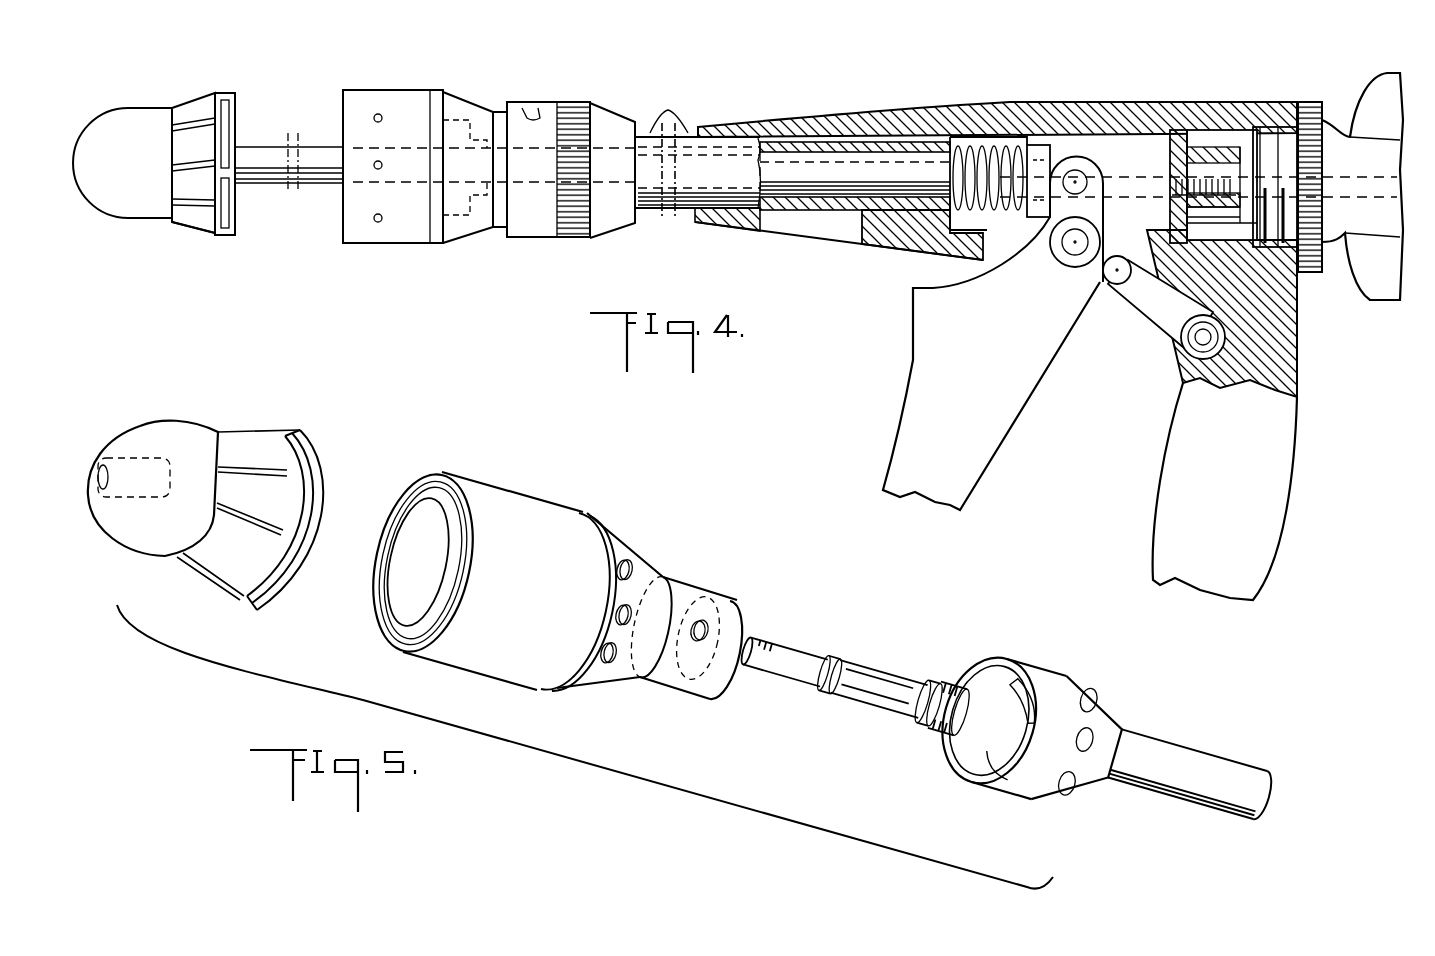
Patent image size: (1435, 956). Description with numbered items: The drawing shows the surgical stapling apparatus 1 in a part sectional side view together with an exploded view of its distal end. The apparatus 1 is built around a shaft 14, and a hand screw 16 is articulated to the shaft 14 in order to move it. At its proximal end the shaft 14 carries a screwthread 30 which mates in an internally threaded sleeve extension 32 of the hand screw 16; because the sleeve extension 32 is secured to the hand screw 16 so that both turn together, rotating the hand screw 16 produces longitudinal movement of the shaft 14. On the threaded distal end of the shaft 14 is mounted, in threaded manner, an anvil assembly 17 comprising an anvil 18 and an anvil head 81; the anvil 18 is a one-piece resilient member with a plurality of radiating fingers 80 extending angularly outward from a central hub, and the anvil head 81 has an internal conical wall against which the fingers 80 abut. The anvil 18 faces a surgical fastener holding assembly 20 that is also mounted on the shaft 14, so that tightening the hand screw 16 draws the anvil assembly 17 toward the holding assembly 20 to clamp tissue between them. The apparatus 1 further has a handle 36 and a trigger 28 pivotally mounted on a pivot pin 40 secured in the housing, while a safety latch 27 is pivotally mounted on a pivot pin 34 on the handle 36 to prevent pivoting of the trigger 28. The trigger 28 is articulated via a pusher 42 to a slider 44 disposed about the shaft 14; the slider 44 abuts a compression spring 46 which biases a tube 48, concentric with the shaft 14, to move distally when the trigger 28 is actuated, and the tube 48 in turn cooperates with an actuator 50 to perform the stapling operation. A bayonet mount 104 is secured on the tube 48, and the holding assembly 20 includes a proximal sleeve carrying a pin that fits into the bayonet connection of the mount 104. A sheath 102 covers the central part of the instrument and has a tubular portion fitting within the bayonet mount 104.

In FIG. 4, the surgical stapling apparatus 1 is at (786, 98).
In FIG. 4, the shaft 14 is at (320, 148).
In FIG. 4, the hand screw 16 is at (1370, 80).
In FIG. 4, the anvil assembly 17 is at (180, 279).
In FIG. 5, the anvil assembly 17 is at (176, 601).
In FIG. 4, the anvil 18 is at (178, 104).
In FIG. 5, the anvil 18 is at (258, 432).
In FIG. 4, the surgical fastener holding assembly 20 is at (475, 103).
In FIG. 5, the surgical fastener holding assembly 20 is at (620, 527).
In FIG. 4, the safety latch 27 is at (1158, 313).
In FIG. 4, the trigger 28 is at (983, 470).
In FIG. 4, the screwthread 30 is at (1213, 150).
In FIG. 4, the sleeve extension 32 is at (1234, 160).
In FIG. 4, the pivot pin 34 is at (1183, 350).
In FIG. 4, the handle 36 is at (1175, 532).
In FIG. 4, the pivot pin 40 is at (1070, 250).
In FIG. 4, the pusher 42 is at (1079, 171).
In FIG. 4, the slider 44 is at (1035, 212).
In FIG. 4, the compression spring 46 is at (995, 150).
In FIG. 4, the tube 48 is at (500, 190).
In FIG. 4, the actuator 50 is at (452, 215).
In FIG. 4, the fingers 80 is at (206, 226).
In FIG. 4, the anvil head 81 is at (135, 215).
In FIG. 4, the sheath 102 is at (674, 151).
In FIG. 4, the bayonet mount 104 is at (612, 112).
In FIG. 5, the bayonet mount 104 is at (1058, 678).